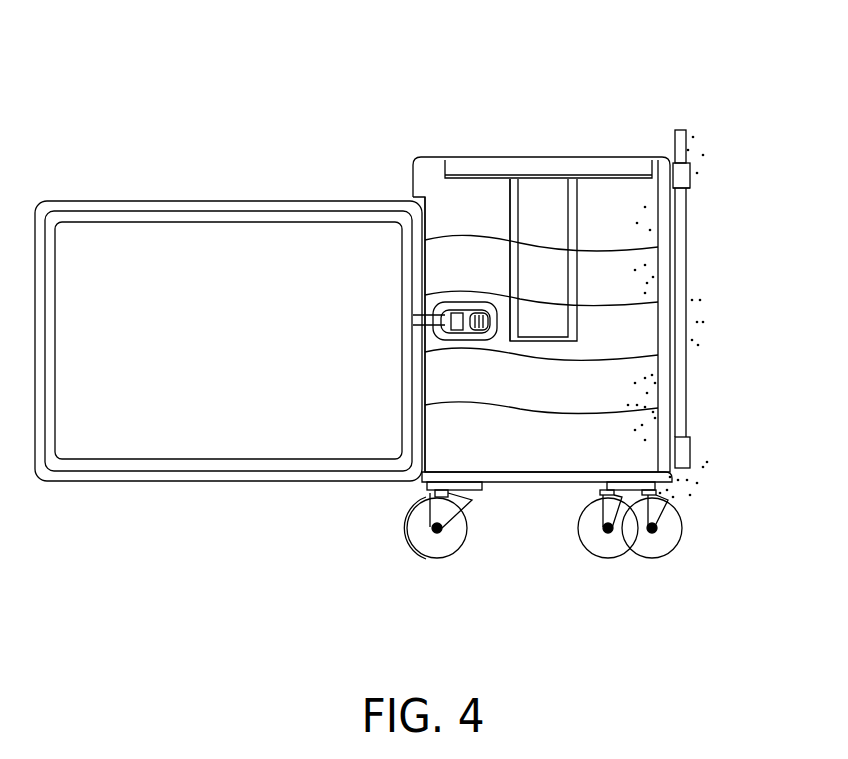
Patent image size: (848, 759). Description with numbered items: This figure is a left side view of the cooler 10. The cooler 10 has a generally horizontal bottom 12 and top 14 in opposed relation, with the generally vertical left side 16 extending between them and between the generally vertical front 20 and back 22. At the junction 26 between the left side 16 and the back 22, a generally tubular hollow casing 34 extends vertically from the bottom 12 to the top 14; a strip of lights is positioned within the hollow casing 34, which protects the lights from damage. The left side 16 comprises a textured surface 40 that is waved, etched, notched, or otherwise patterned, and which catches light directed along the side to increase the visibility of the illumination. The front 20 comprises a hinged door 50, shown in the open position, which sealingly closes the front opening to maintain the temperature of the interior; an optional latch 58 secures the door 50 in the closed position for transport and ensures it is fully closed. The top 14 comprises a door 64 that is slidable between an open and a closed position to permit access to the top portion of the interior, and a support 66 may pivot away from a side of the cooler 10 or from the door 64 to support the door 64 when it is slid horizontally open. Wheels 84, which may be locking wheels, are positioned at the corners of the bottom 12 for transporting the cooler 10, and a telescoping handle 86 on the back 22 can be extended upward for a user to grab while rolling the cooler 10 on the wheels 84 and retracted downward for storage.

The cooler 10 is at (726, 68).
The bottom 12 is at (518, 485).
The top 14 is at (509, 333).
The left side 16 is at (443, 443).
The front 20 is at (405, 178).
The back 22 is at (686, 232).
The junction 26 is at (663, 143).
The hollow casing 34 is at (665, 203).
The textured surface 40 is at (553, 390).
The door 50 is at (210, 483).
The latch 58 is at (445, 302).
The door 64 is at (568, 157).
The support 66 is at (510, 210).
The wheels 84 is at (448, 555).
The handle 86 is at (682, 125).